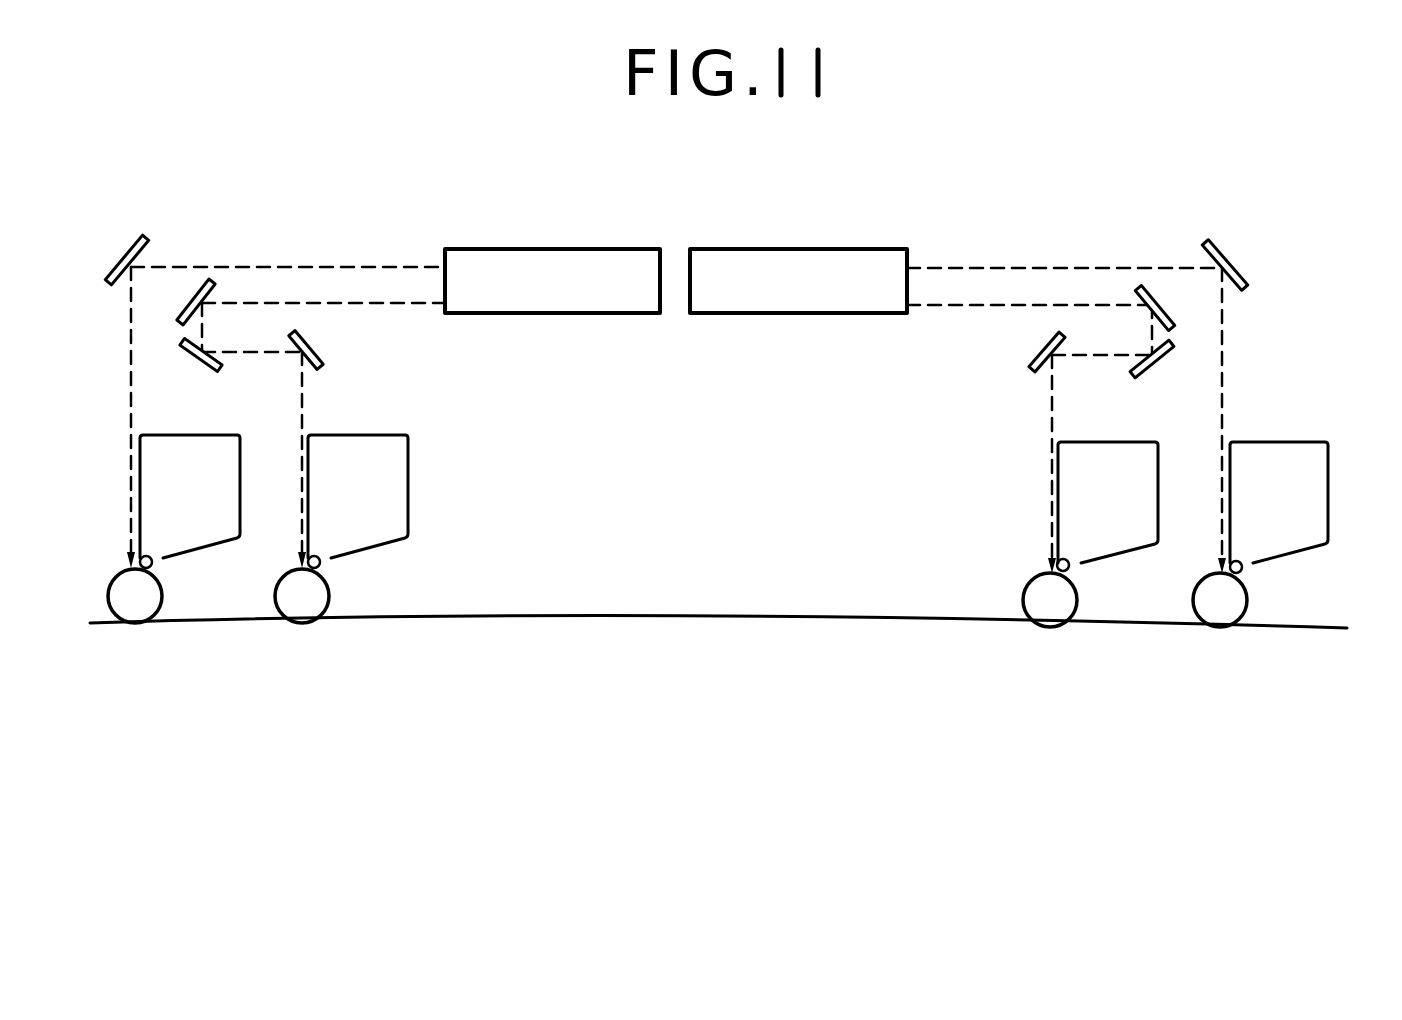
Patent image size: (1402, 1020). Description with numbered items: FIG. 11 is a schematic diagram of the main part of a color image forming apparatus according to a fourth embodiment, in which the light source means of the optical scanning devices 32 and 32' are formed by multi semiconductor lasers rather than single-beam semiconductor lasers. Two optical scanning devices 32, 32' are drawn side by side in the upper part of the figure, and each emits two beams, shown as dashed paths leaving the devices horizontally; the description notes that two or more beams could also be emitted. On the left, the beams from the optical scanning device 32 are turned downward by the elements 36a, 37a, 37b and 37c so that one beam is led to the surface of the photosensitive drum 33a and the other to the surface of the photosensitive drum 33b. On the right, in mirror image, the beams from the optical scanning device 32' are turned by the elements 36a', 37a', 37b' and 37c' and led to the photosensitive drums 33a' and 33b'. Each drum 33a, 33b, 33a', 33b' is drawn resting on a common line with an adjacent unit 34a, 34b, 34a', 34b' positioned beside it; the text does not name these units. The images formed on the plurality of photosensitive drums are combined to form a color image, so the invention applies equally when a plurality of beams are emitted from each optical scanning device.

The optical scanning device 32 is at (552, 319).
The optical scanning device 32' is at (798, 319).
The photosensitive drum 33a is at (151, 638).
The photosensitive drum 33b is at (314, 638).
The photosensitive drum 33a' is at (1055, 642).
The photosensitive drum 33b' is at (1240, 642).
The developing unit 34a is at (204, 571).
The developing unit 34b is at (381, 571).
The developing unit 34a' is at (1120, 577).
The developing unit 34b' is at (1314, 577).
The reflecting mirror 36a is at (120, 235).
The reflecting mirror 36a' is at (1259, 239).
The reflecting mirror 37a is at (207, 270).
The reflecting mirror 37b is at (210, 383).
The reflecting mirror 37c is at (348, 360).
The reflecting mirror 37a' is at (1141, 274).
The reflecting mirror 37b' is at (1161, 385).
The reflecting mirror 37c' is at (996, 361).